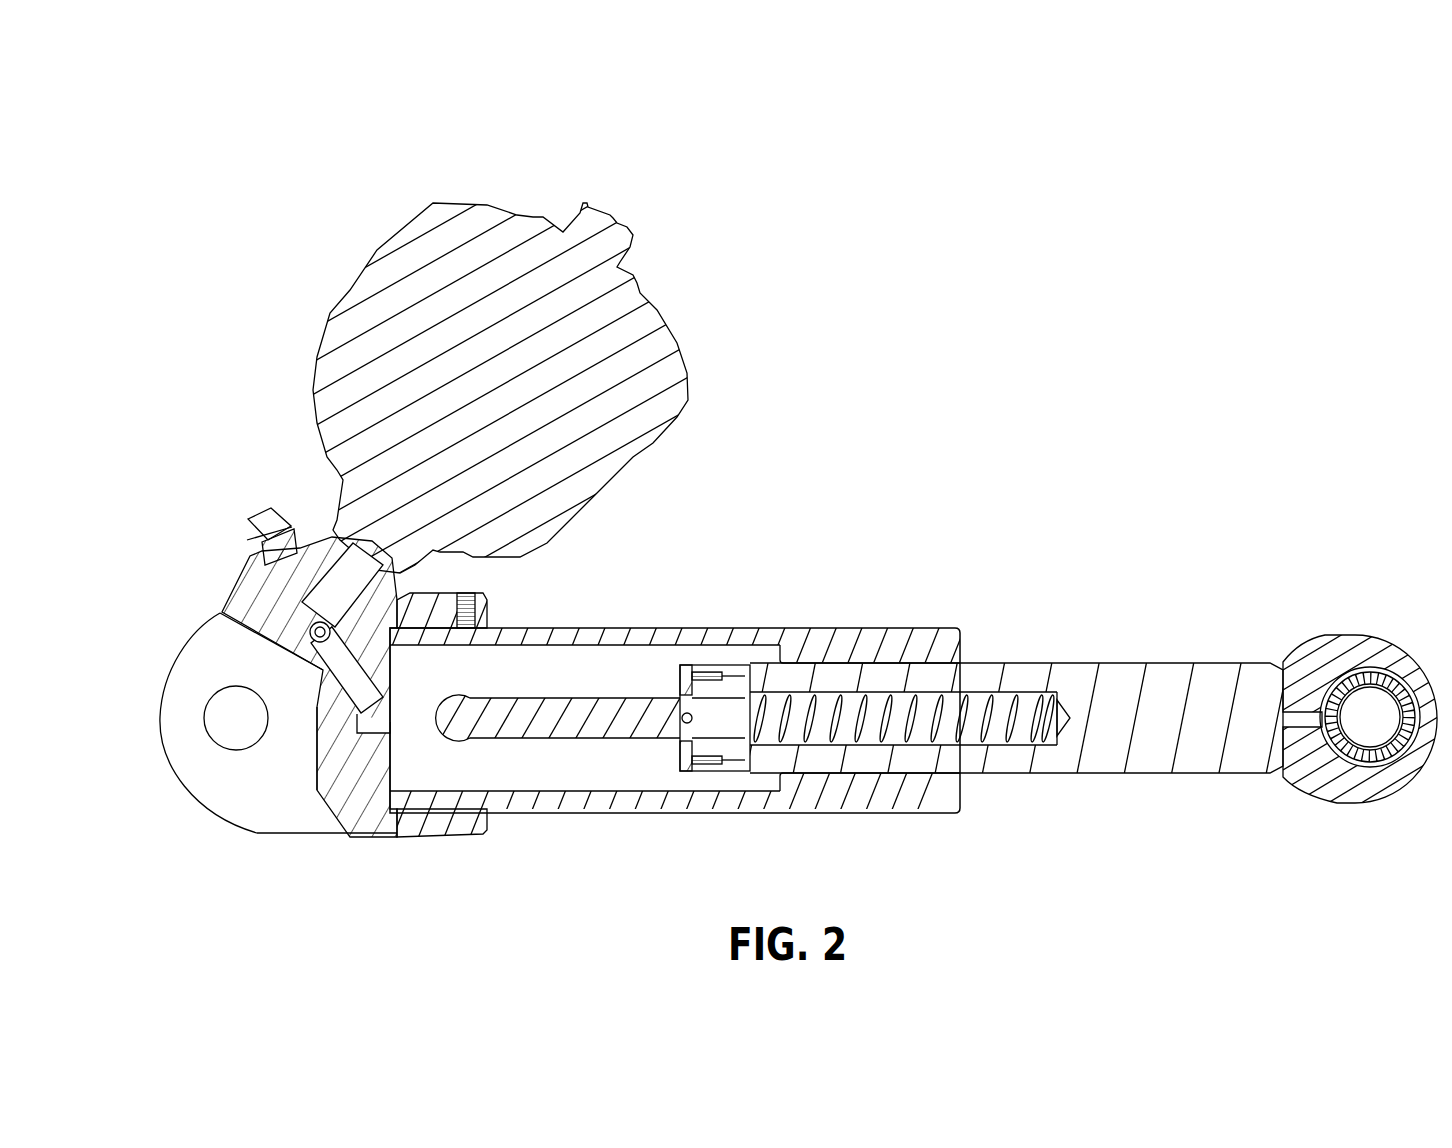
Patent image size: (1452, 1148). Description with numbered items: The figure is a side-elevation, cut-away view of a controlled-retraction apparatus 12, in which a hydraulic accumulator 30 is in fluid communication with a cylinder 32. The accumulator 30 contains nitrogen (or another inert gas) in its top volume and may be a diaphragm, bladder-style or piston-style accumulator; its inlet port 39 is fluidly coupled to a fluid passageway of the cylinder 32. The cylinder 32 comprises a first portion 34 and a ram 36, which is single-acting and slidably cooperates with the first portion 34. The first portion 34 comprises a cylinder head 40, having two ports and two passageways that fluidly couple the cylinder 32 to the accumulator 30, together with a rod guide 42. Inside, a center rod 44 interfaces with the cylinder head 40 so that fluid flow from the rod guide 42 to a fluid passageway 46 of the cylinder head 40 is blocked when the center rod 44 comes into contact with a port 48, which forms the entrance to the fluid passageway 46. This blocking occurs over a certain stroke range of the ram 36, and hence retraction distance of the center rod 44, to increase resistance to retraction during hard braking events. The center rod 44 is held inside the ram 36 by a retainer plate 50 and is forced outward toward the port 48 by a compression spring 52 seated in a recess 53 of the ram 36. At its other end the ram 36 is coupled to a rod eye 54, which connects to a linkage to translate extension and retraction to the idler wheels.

The controlled-retraction apparatus 12 is at (270, 105).
The hydraulic accumulator 30 is at (322, 340).
The cylinder 32 is at (838, 708).
The first portion 34 is at (635, 627).
The ram 36 is at (1063, 662).
The inlet port 39 is at (290, 613).
The cylinder head 40 is at (372, 830).
The rod guide 42 is at (580, 808).
The center rod 44 is at (508, 700).
The fluid passageway 46 is at (343, 680).
The port 48 is at (387, 717).
The retainer plate 50 is at (683, 660).
The compression spring 52 is at (962, 690).
The recess 53 is at (1078, 738).
The rod eye 54 is at (1312, 635).